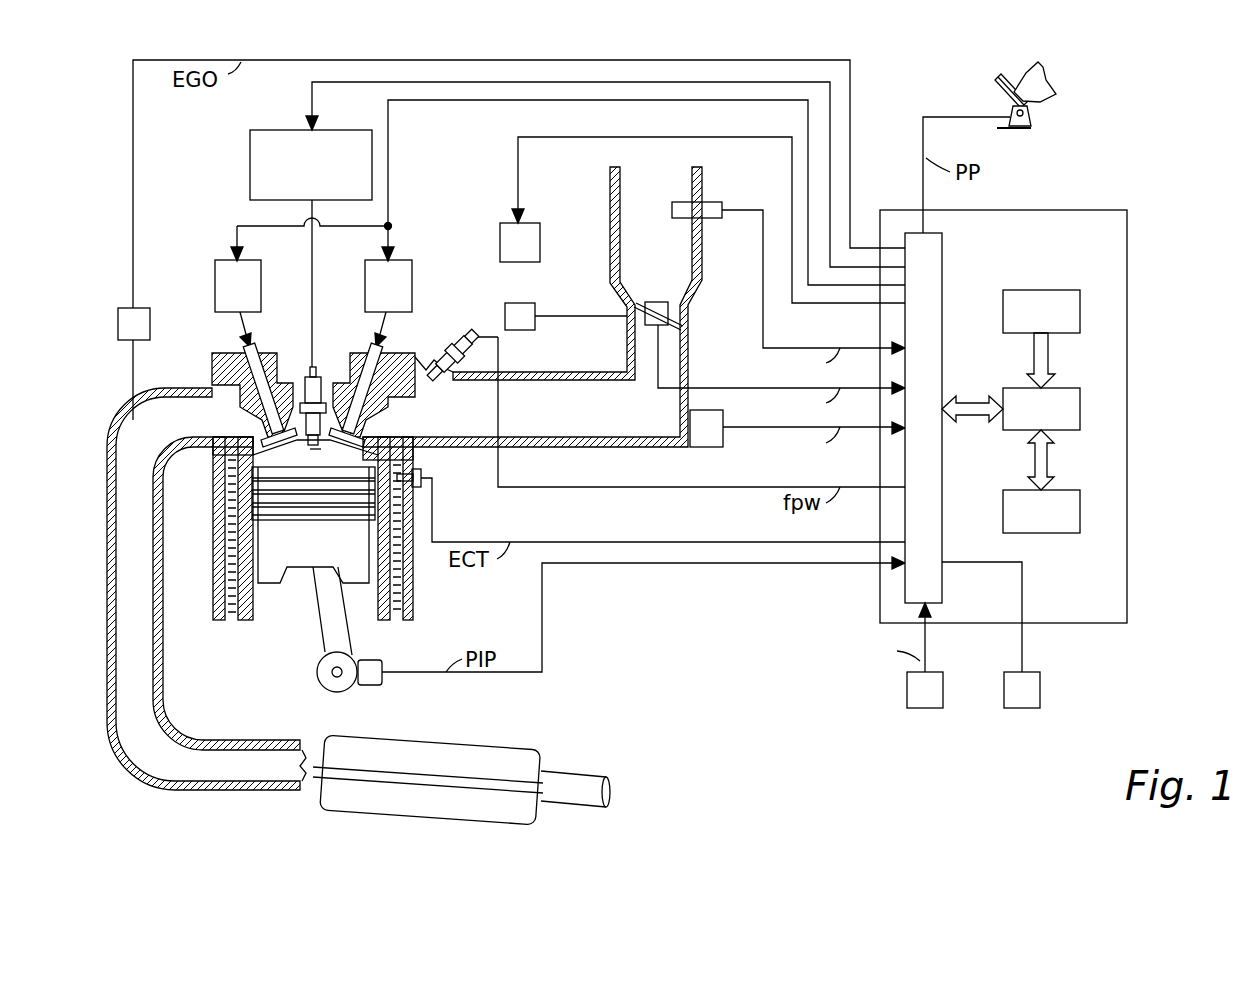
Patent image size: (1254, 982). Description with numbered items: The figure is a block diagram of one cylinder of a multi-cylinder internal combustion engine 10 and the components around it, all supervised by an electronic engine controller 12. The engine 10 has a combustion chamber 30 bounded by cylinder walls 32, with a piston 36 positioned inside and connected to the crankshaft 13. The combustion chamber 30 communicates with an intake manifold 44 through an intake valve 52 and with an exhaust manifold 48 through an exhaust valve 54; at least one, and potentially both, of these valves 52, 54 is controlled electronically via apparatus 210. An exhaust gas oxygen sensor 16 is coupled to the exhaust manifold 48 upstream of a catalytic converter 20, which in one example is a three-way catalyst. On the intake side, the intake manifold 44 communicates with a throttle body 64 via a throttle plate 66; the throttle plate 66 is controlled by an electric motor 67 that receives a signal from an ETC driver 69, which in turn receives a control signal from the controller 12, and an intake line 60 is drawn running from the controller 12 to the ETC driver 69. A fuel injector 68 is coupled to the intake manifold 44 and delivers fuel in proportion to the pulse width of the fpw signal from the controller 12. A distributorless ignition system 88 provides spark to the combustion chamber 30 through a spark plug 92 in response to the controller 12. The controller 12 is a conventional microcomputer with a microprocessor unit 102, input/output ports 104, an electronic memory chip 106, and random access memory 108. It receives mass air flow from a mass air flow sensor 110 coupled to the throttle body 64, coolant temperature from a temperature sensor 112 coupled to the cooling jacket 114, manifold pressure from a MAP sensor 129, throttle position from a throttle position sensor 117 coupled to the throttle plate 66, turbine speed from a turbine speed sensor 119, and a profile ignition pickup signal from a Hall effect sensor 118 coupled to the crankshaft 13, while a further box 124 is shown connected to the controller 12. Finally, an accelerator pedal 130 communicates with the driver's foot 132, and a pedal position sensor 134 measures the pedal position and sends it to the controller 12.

The internal combustion engine 10 is at (241, 700).
The electronic engine controller 12 is at (1088, 210).
The crankshaft 13 is at (338, 690).
The exhaust gas oxygen sensor 16 is at (142, 306).
The catalytic converter 20 is at (505, 748).
The combustion chamber 30 is at (300, 457).
The cylinder walls 32 is at (252, 619).
The piston 36 is at (317, 558).
The intake manifold 44 is at (606, 426).
The exhaust manifold 48 is at (138, 586).
The intake valve 52 is at (363, 438).
The exhaust valve 54 is at (262, 438).
The intake line 60 is at (646, 137).
The throttle body 64 is at (678, 192).
The throttle plate 66 is at (641, 305).
The electric motor 67 is at (533, 303).
The fuel injector 68 is at (446, 353).
The ETC driver 69 is at (531, 223).
The distributorless ignition system 88 is at (335, 130).
The spark plug 92 is at (319, 375).
The microprocessor unit 102 is at (1060, 388).
The input/output ports 104 is at (948, 276).
The electronic memory chip 106 is at (1030, 290).
The random access memory 108 is at (1058, 490).
The mass air flow sensor 110 is at (713, 202).
The temperature sensor 112 is at (425, 474).
The cooling jacket 114 is at (398, 596).
The throttle position sensor 117 is at (666, 302).
The Hall effect sensor 118 is at (370, 660).
The turbine speed sensor 119 is at (935, 672).
The actuator 124 is at (1032, 672).
The MAP sensor 129 is at (707, 447).
The accelerator pedal 130 is at (996, 96).
The driver's foot 132 is at (1040, 88).
The pedal position sensor 134 is at (1032, 120).
The apparatus 210 is at (222, 299).